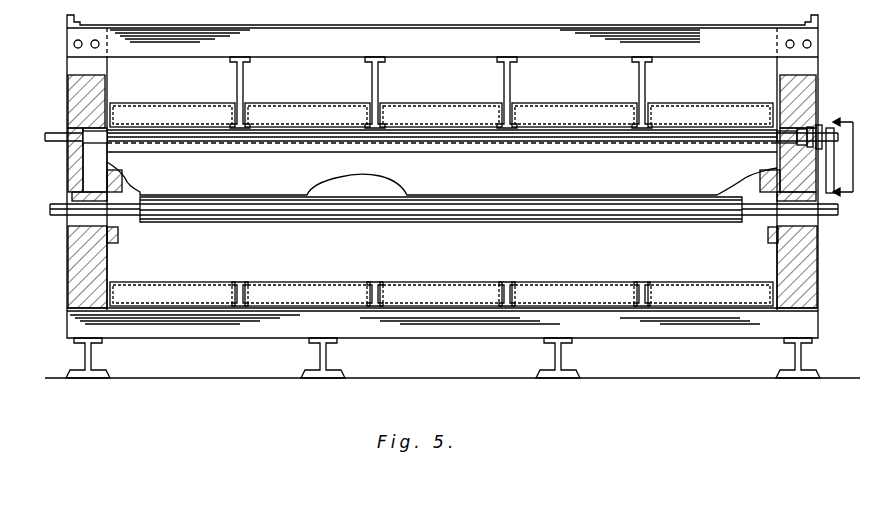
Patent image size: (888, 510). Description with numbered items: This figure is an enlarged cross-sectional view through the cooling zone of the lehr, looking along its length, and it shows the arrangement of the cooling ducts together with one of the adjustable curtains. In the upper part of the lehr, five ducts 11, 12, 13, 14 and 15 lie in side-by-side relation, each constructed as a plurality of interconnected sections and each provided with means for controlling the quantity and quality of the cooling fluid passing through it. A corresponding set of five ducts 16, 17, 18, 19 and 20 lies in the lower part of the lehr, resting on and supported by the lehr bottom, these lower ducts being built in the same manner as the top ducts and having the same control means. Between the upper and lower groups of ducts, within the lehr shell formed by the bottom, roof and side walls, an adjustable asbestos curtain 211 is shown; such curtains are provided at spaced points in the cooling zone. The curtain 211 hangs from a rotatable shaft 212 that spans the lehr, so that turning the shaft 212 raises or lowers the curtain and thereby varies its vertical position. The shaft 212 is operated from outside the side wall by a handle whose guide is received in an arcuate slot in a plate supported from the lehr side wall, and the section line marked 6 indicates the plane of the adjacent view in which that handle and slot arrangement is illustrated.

The section line 6- 6 is at (850, 158).
The duct 11 is at (180, 110).
The duct 12 is at (304, 110).
The duct 13 is at (449, 110).
The duct 14 is at (576, 110).
The duct 15 is at (703, 110).
The duct 16 is at (172, 290).
The duct 17 is at (309, 290).
The duct 18 is at (447, 290).
The duct 19 is at (578, 290).
The duct 20 is at (709, 290).
The adjustable asbestos curtain 211 is at (585, 172).
The rotatable shaft 212 is at (726, 148).